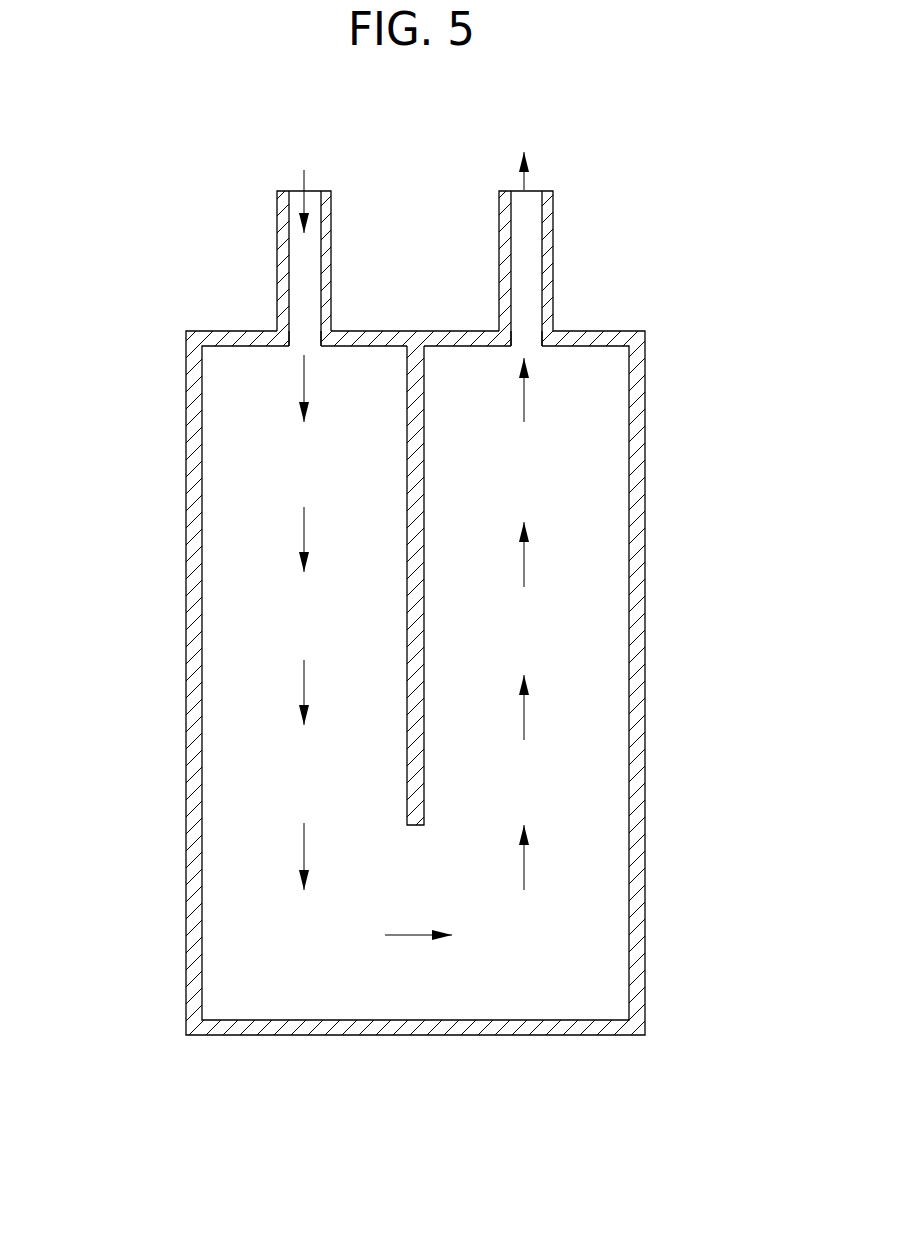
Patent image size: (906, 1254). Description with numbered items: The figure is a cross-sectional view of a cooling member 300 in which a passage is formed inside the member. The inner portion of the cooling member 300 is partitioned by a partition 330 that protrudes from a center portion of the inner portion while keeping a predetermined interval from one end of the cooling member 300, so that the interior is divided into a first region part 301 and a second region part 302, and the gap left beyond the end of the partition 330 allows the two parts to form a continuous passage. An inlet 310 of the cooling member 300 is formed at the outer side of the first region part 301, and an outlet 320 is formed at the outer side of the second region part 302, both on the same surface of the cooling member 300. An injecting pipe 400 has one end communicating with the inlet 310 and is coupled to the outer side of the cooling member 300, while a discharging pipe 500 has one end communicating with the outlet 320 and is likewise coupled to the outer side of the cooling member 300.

The cooling member 300 is at (194, 205).
The first region part 301 is at (243, 517).
The second region part 302 is at (578, 385).
The inlet 310 is at (298, 352).
The outlet 320 is at (532, 352).
The partition 330 is at (407, 773).
The injecting pipe 400 is at (326, 195).
The discharging pipe 500 is at (548, 193).